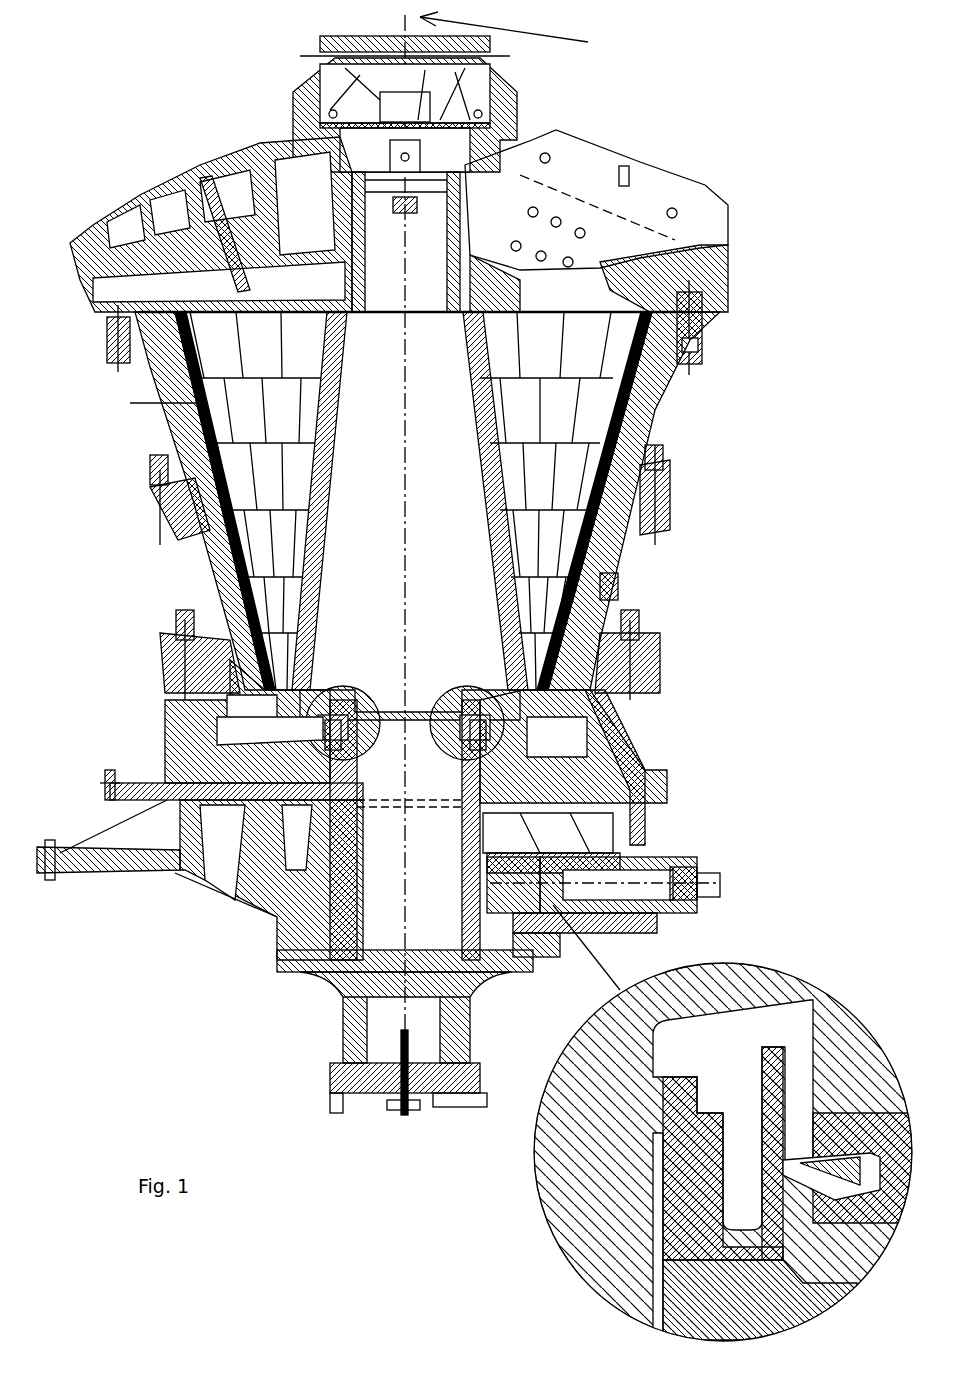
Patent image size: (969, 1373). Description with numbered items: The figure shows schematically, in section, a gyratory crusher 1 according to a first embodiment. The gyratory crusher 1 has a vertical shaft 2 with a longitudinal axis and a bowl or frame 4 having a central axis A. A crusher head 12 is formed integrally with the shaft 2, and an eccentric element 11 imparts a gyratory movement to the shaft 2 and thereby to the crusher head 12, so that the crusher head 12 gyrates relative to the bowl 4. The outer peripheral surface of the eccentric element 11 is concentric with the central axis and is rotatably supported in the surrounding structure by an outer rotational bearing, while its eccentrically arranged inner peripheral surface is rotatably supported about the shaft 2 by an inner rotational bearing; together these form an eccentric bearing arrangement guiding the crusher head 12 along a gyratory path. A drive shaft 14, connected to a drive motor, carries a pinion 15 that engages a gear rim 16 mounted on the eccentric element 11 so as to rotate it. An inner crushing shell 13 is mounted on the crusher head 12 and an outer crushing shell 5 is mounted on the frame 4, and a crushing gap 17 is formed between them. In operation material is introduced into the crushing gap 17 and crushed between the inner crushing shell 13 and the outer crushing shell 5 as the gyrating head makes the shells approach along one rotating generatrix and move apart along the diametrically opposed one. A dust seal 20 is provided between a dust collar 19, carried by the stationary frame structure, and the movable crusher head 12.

The gyratory crusher 1 is at (399, 558).
The vertical shaft 2 is at (383, 915).
The bowl or frame 4 is at (615, 533).
The outer crushing shell 5 is at (640, 442).
The eccentric element 11 is at (540, 815).
The crusher head 12 is at (450, 423).
The inner crushing shell 13 is at (182, 403).
The drive shaft 14 is at (650, 838).
The pinion 15 is at (505, 955).
The gear rim 16 is at (483, 987).
The crushing gap 17 is at (517, 365).
The dust collar 19 is at (773, 1050).
The dust seal 20 is at (780, 1200).